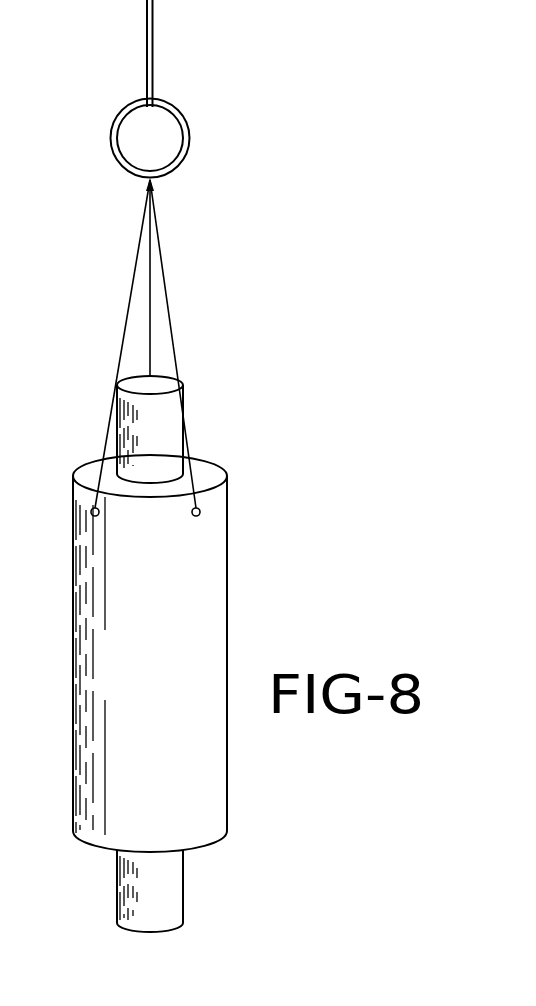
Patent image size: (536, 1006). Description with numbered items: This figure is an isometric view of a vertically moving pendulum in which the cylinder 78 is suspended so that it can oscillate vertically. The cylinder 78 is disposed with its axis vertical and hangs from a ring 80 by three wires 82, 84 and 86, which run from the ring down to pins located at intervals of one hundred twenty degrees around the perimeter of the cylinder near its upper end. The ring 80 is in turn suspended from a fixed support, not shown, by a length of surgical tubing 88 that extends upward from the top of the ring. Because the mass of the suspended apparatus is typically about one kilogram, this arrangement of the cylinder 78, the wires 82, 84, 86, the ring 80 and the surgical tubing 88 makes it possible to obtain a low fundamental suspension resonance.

The cylinder 78 is at (212, 610).
The ring 80 is at (186, 122).
The wire 82 is at (172, 298).
The wire 84 is at (150, 347).
The wire 86 is at (132, 279).
The surgical tubing 88 is at (153, 52).